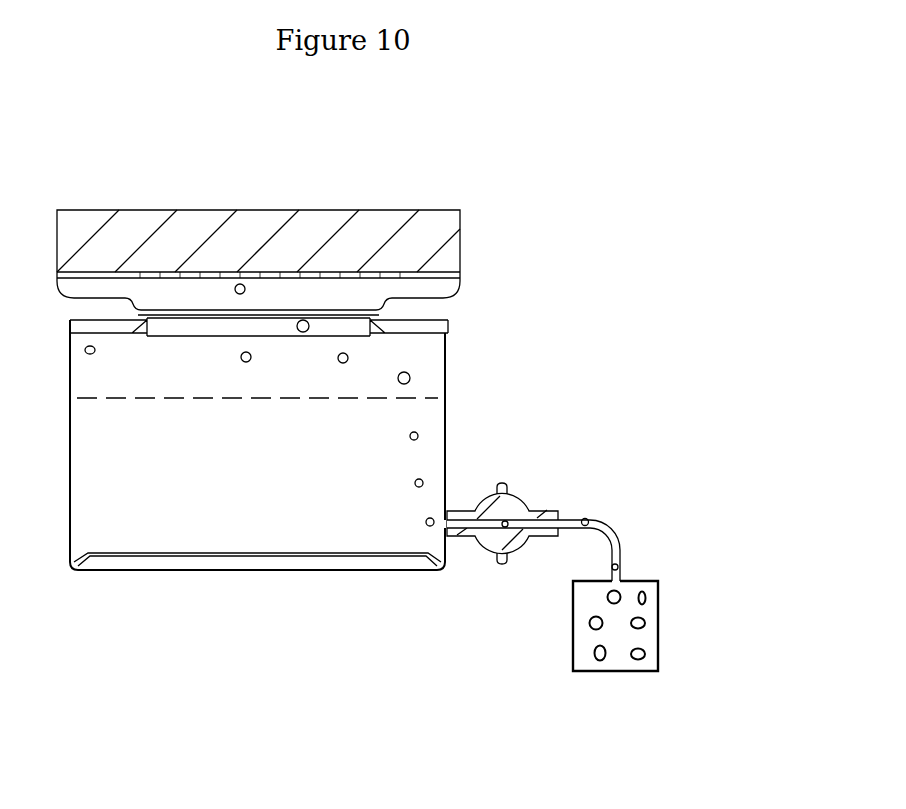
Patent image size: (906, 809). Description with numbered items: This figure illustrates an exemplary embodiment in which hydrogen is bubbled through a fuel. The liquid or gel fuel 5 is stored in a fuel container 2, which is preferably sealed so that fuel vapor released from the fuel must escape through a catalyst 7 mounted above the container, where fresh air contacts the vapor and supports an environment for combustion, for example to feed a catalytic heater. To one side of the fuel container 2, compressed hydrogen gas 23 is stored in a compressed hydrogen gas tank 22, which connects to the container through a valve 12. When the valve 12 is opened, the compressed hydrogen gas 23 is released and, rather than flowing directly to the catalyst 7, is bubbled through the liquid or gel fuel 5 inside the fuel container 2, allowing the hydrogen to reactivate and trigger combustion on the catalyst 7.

The fuel container 2 is at (58, 488).
The liquid or gel fuel 5 is at (288, 548).
The catalyst 7 is at (396, 199).
The valve 12 is at (525, 483).
The compressed hydrogen gas tank 22 is at (672, 641).
The compressed hydrogen gas 23 is at (426, 378).